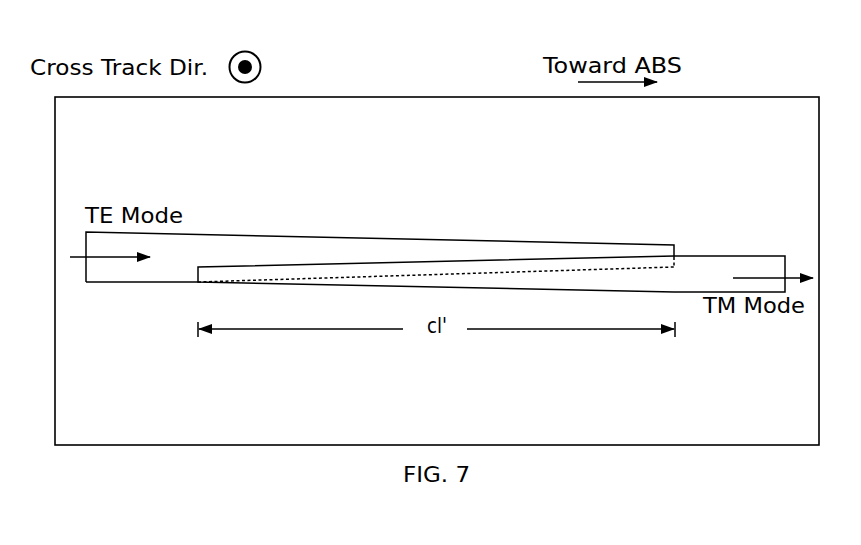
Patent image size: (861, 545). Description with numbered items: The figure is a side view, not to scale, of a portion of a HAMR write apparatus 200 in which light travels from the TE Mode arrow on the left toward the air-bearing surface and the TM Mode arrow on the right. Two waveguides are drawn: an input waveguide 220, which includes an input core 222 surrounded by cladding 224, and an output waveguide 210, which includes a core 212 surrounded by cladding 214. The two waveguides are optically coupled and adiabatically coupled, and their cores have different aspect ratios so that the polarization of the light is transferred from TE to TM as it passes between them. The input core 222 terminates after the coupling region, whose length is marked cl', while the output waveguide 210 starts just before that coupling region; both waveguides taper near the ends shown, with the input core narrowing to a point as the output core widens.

The HAMR write apparatus 200 is at (465, 24).
The output waveguide 210 is at (498, 172).
The core 212 is at (491, 274).
The cladding 214 is at (280, 161).
The input waveguide 220 is at (380, 167).
The input core 222 is at (380, 257).
The cladding 224 is at (532, 408).